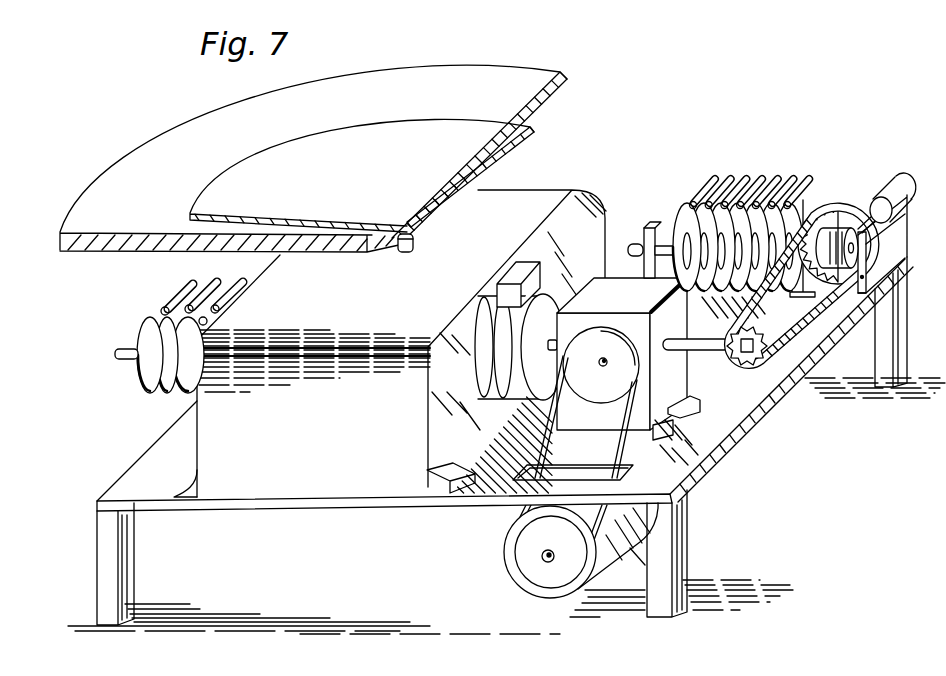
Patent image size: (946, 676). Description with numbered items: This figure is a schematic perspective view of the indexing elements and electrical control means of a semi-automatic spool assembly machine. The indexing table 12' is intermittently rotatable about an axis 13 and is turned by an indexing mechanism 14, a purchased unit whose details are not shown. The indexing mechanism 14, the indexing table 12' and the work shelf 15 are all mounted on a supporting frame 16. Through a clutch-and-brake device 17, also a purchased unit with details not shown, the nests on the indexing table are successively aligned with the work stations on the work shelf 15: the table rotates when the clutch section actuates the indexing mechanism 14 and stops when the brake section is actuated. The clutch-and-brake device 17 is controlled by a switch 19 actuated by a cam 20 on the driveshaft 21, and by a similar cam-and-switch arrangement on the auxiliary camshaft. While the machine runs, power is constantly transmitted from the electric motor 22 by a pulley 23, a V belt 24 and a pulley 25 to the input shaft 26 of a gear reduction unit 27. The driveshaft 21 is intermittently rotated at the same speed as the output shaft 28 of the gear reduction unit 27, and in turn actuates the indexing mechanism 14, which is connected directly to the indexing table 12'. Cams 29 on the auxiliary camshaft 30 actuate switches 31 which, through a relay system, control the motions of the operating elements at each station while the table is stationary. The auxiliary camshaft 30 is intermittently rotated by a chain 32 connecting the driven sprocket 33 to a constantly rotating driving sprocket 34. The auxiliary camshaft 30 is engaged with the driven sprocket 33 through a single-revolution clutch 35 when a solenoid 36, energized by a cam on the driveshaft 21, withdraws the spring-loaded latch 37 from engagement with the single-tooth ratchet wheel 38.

The indexing table 12' is at (362, 175).
The axis 13 is at (401, 251).
The indexing mechanism 14 is at (501, 244).
The work shelf 15 is at (224, 154).
The supporting frame 16 is at (743, 416).
The clutch-and-brake device 17 is at (556, 341).
The switch 19 is at (162, 308).
The cam 20 is at (145, 342).
The driveshaft 21 is at (117, 354).
The electric motor 22 is at (505, 537).
The pulley 23 is at (519, 574).
The V belt 24 is at (626, 456).
The pulley 25 is at (628, 392).
The input shaft 26 is at (603, 358).
The gear reduction unit 27 is at (628, 311).
The output shaft 28 is at (689, 318).
The cams 29 is at (690, 212).
The auxiliary camshaft 30 is at (632, 245).
The switches 31 is at (708, 172).
The chain 32 is at (773, 366).
The driven sprocket 33 is at (832, 214).
The driving sprocket 34 is at (740, 362).
The single-revolution clutch 35 is at (843, 286).
The solenoid 36 is at (893, 178).
The spring-loaded latch 37 is at (860, 243).
The single-tooth ratchet wheel 38 is at (868, 264).